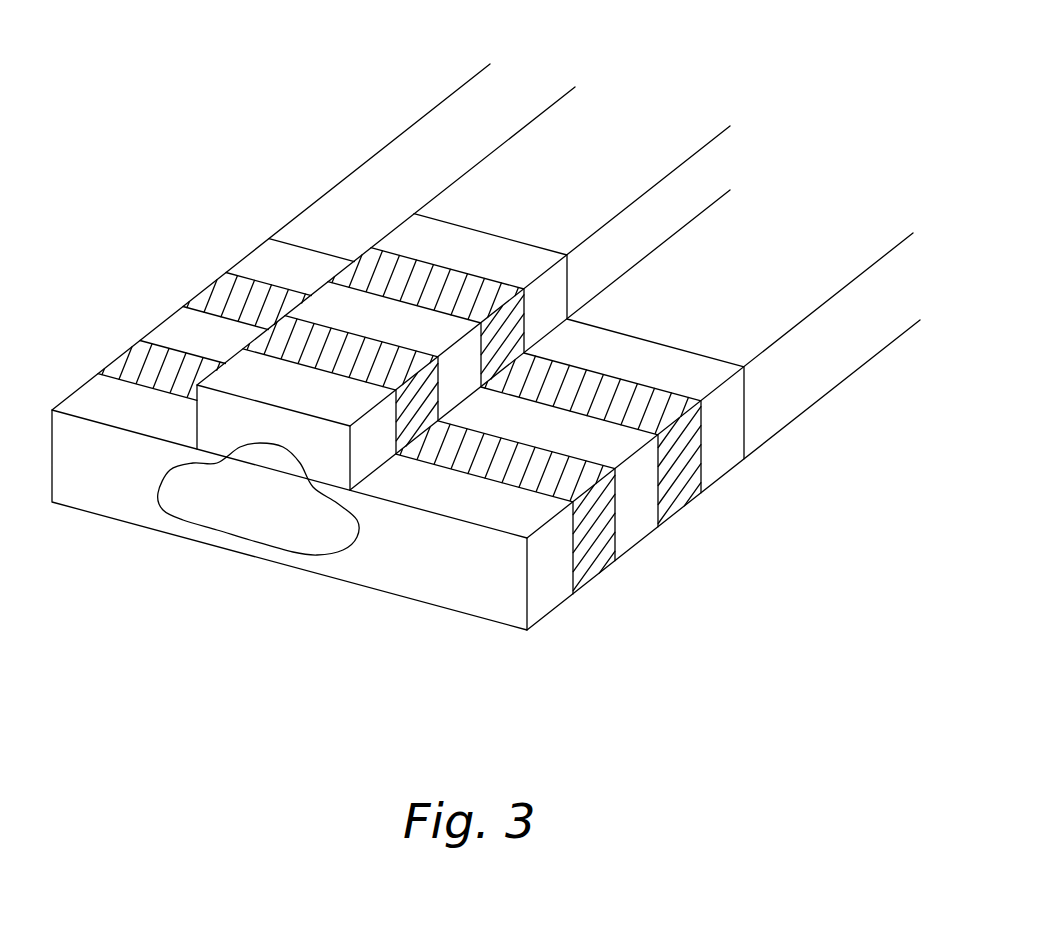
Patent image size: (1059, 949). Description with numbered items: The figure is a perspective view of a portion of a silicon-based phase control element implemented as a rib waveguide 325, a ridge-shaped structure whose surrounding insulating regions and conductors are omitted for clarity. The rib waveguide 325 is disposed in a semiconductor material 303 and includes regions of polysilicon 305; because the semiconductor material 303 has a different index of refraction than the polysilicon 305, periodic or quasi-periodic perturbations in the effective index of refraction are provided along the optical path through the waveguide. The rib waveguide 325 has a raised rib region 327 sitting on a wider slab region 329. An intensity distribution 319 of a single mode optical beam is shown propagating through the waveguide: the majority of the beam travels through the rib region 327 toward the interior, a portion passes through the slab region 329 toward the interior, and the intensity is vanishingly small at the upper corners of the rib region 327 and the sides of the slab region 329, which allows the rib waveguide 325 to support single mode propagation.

The rib waveguide 325 is at (703, 84).
The slab region 329 is at (467, 594).
The rib region 327 is at (334, 452).
The semiconductor material 303 is at (547, 617).
The polysilicon 305 is at (605, 568).
The intensity distribution 319 is at (293, 553).